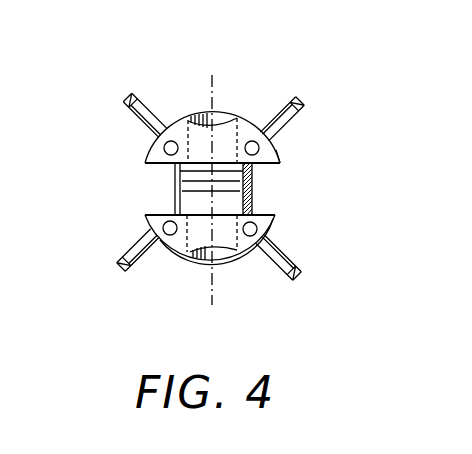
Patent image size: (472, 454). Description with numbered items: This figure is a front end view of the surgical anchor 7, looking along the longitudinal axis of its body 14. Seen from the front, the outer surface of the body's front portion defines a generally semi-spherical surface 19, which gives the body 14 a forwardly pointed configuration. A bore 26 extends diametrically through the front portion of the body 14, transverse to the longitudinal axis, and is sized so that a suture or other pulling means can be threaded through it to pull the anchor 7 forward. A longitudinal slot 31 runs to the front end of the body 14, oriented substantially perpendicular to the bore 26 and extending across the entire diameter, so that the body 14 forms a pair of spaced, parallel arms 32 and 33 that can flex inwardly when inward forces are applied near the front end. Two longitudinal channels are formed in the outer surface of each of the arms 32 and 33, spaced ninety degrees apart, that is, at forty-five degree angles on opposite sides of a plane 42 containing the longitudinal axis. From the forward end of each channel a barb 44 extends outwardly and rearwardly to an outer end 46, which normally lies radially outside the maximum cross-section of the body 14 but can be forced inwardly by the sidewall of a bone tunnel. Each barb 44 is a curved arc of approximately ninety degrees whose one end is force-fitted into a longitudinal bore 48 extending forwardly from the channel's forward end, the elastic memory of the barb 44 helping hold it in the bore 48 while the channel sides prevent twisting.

The surgical anchor 7 is at (248, 63).
The body 14 is at (249, 112).
The semi-spherical surface 19 is at (210, 155).
The bore 26 is at (200, 236).
The longitudinal slot 31 is at (265, 194).
The arm 32 is at (277, 159).
The arm 33 is at (243, 250).
The plane 42 is at (205, 288).
The barb 44 is at (141, 112).
The outer end 46 is at (124, 99).
The longitudinal bore 48 is at (160, 150).